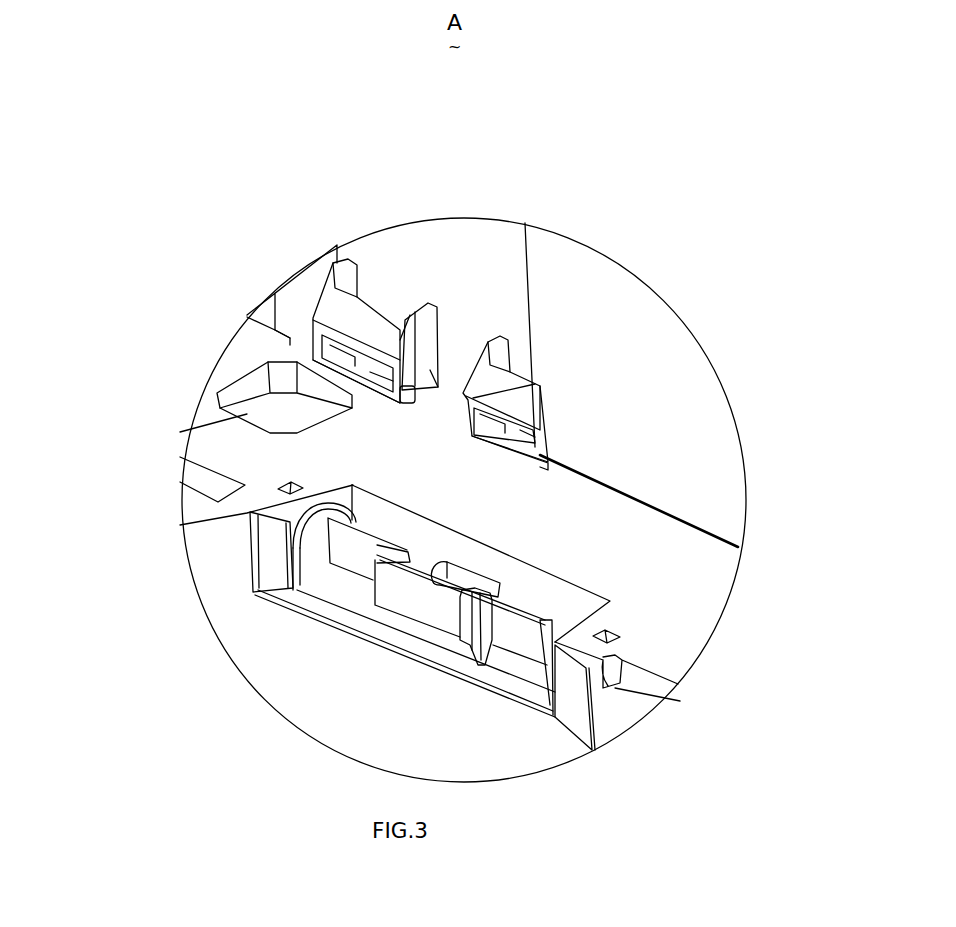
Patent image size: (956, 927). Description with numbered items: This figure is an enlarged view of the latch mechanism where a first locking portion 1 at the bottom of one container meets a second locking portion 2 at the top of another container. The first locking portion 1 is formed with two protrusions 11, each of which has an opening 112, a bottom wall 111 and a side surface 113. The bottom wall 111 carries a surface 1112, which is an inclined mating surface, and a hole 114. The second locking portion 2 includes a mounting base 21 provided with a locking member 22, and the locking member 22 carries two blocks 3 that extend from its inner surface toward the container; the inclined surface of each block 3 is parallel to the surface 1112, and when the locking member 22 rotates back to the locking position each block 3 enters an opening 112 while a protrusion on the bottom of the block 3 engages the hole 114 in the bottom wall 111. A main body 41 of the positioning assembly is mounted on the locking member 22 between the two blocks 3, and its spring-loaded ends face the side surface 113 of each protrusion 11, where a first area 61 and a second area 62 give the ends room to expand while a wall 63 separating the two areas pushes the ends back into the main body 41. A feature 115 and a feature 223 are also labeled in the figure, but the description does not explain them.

The first locking portion 1 is at (626, 324).
The protrusion 11 is at (367, 318).
The bottom wall 111 is at (305, 332).
The opening 112 is at (393, 385).
The side surface 113 is at (422, 343).
The hole 114 is at (533, 445).
The housing top edge 115 is at (535, 384).
The surface 1112 is at (340, 412).
The first area 61 is at (408, 335).
The second area 62 is at (438, 385).
The wall 63 is at (413, 392).
The second locking portion 2 is at (512, 744).
The mounting base 21 is at (568, 697).
The locking member 22 is at (417, 593).
The arched wall 223 is at (363, 573).
The block 3 is at (353, 548).
The main body 41 is at (473, 582).